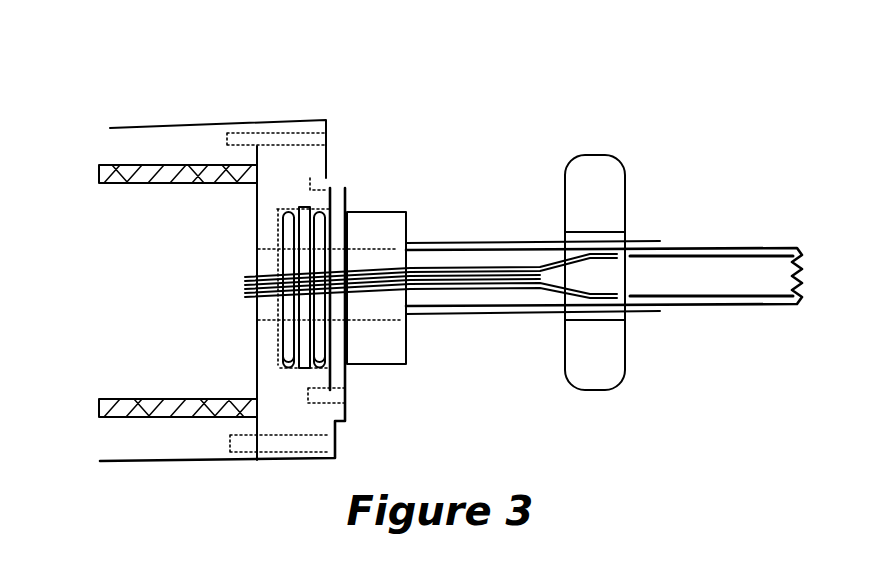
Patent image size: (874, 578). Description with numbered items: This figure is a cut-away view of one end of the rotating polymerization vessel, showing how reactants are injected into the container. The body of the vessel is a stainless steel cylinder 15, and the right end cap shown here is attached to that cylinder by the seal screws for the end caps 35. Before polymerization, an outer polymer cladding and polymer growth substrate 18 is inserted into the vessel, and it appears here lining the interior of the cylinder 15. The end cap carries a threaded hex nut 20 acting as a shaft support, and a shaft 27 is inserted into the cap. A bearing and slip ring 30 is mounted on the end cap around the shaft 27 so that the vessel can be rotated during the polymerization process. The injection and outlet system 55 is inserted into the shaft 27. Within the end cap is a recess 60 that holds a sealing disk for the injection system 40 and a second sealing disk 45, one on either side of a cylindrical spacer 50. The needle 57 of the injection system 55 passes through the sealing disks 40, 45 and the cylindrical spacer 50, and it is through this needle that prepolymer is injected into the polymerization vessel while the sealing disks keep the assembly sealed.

The stainless steel cylinder 15 is at (125, 462).
The outer polymer cladding and polymer growth substrate 18 is at (140, 164).
The threaded hex nut 20 is at (390, 364).
The shaft 27 is at (440, 314).
The bearing and slip ring 30 is at (578, 155).
The seal screws for the end caps 35 is at (288, 120).
The sealing disk for injection system 40 is at (322, 212).
The sealing disk for injection system 45 is at (277, 367).
The cylindrical spacer 50 is at (303, 370).
The injection and outlet system 55 is at (708, 224).
The needle 57 is at (406, 237).
The recess 60 is at (247, 300).